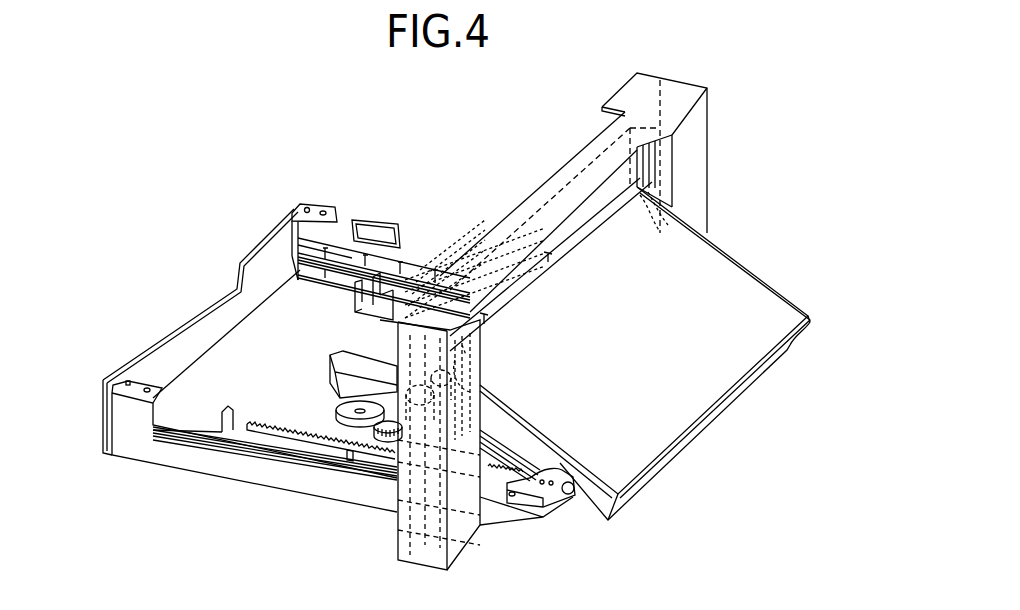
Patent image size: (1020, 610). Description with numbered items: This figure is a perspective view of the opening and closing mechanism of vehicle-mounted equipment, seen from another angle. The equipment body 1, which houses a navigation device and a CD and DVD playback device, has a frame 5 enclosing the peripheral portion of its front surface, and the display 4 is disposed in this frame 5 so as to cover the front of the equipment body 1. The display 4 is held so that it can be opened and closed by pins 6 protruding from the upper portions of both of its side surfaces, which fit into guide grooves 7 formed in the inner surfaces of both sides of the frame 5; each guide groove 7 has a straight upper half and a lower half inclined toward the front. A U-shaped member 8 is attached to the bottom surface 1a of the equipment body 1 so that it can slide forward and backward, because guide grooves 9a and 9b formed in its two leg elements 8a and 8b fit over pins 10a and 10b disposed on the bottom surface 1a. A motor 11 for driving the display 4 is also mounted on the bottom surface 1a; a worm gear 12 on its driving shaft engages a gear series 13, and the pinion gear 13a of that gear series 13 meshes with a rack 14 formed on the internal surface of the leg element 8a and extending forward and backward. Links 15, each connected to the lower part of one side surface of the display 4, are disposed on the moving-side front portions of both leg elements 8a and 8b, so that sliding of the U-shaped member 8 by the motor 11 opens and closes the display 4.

The equipment body 1 is at (431, 182).
The bottom surface 1a is at (232, 355).
The display 4 is at (688, 397).
The frame 5 is at (677, 87).
The pins 6 is at (640, 203).
The guide grooves 7 is at (647, 170).
The U-shaped member 8 is at (512, 470).
The leg element 8a is at (227, 417).
The leg element 8b is at (358, 295).
The guide groove 9a is at (247, 438).
The guide groove 9b is at (388, 293).
The pin 10a is at (350, 458).
The pin 10b is at (520, 312).
The motor 11 is at (334, 373).
The worm gear 12 is at (402, 365).
The gear series 13 is at (338, 406).
The pinion gear 13a is at (377, 445).
The rack 14 is at (300, 422).
The links 15 is at (530, 493).